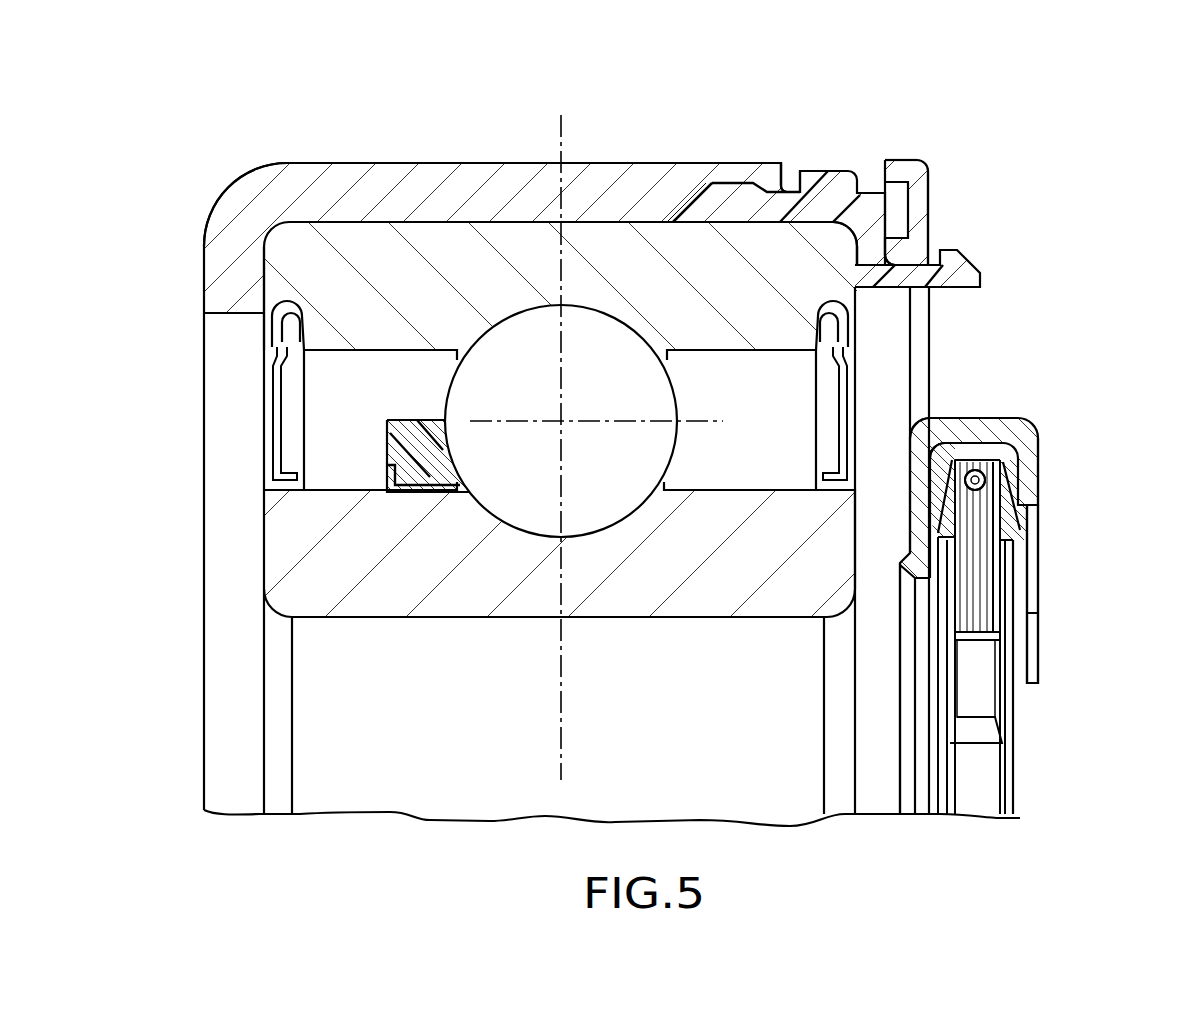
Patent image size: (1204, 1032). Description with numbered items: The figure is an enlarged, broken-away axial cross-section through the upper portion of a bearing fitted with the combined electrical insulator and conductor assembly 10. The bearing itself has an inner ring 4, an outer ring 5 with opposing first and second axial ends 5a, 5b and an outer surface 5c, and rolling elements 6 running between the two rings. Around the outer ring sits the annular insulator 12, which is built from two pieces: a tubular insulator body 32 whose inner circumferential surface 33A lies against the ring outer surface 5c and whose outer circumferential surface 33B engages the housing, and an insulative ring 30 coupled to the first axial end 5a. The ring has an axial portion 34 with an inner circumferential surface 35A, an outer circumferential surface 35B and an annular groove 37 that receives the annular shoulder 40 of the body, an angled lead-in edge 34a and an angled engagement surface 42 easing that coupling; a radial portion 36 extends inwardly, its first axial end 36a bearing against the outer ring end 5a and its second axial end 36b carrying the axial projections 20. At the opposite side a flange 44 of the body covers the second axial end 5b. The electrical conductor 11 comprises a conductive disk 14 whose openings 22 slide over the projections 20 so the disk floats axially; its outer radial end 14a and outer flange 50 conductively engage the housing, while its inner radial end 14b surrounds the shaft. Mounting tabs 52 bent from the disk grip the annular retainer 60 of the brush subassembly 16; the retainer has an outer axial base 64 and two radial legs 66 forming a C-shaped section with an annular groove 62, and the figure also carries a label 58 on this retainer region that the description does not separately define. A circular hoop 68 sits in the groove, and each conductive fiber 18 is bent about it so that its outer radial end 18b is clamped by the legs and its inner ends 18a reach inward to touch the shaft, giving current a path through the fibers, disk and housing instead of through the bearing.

The inner ring 4 is at (476, 600).
The outer ring 5 is at (378, 226).
The first axial end 5a is at (853, 298).
The second axial end 5b is at (262, 278).
The outer surface 5c is at (462, 220).
The rolling elements 6 is at (590, 525).
The combined electrical insulator and conductor assembly 10 is at (1025, 133).
The electrical conductor 11 is at (1125, 380).
The annular insulator 12 is at (528, 122).
The conductive disk 14 is at (975, 354).
The outer radial end 14a is at (908, 146).
The inner radial end 14b is at (903, 584).
The brush subassembly 16 is at (1118, 495).
The conductive fibers 18 is at (993, 563).
The inner end 18a is at (987, 627).
The outer radial end 18b is at (997, 470).
The projections 20 is at (990, 268).
The openings 22 is at (925, 330).
The insulative ring 30 is at (853, 168).
The tubular insulator body 32 is at (633, 156).
The inner circumferential surface 33A is at (607, 224).
The outer circumferential surface 33B is at (584, 162).
The axial portion 34 is at (819, 166).
The angled lead-in edge 34a is at (697, 172).
The inner circumferential surface 35A is at (745, 224).
The outer circumferential surface 35B is at (730, 170).
The radial portion 36 is at (883, 213).
The first axial end 36a is at (847, 265).
The second axial end 36b is at (918, 240).
The annular groove 37 is at (778, 175).
The annular shoulder 40 is at (786, 186).
The angled engagement surface 42 is at (683, 224).
The flange 44 is at (220, 245).
The outer flange 50 is at (900, 172).
The mounting tabs 52 is at (1038, 424).
The seal case inner surface 58 is at (928, 418).
The annular retainer 60 is at (935, 428).
The annular groove 62 is at (978, 533).
The outer axial base 64 is at (975, 447).
The radial legs 66 is at (943, 498).
The circular hoop 68 is at (968, 478).